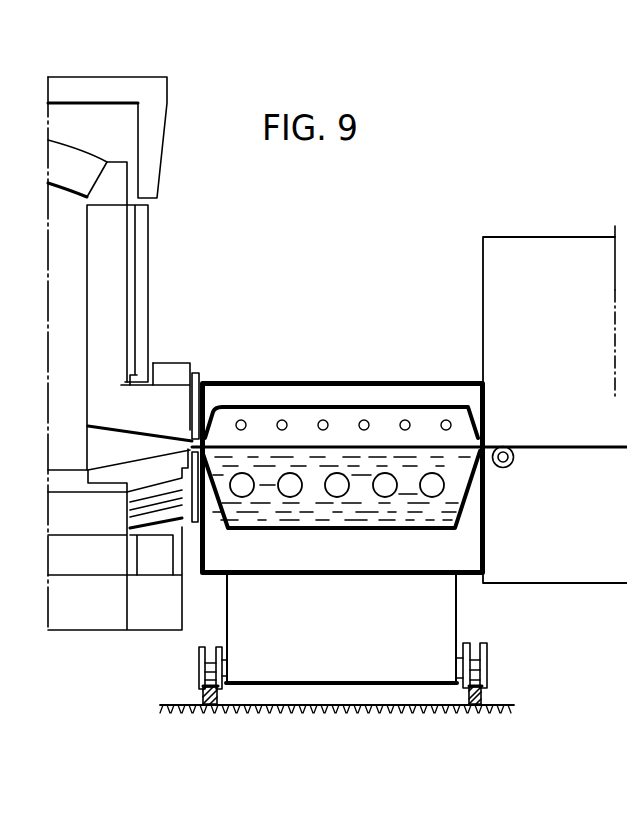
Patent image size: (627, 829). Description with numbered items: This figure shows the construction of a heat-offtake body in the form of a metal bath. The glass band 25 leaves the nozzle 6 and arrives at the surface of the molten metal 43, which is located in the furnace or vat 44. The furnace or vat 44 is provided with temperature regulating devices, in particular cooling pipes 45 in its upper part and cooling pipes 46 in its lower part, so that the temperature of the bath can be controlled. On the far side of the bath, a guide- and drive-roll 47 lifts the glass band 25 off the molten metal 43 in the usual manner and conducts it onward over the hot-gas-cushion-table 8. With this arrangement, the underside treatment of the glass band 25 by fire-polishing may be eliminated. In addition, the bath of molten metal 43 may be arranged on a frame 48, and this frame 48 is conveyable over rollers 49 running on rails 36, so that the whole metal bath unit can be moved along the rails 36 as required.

The nozzle 6 is at (191, 440).
The glass band 25 is at (212, 443).
The cooling pipes 45 is at (322, 421).
The molten metal 43 is at (305, 500).
The cooling pipes 46 is at (388, 490).
The furnace or vat 44 is at (368, 560).
The guide- and drive-roll 47 is at (513, 461).
The hot-gas-cushion-table 8 is at (548, 574).
The rollers 49 is at (482, 658).
The frame 48 is at (297, 668).
The rails 36 is at (477, 706).